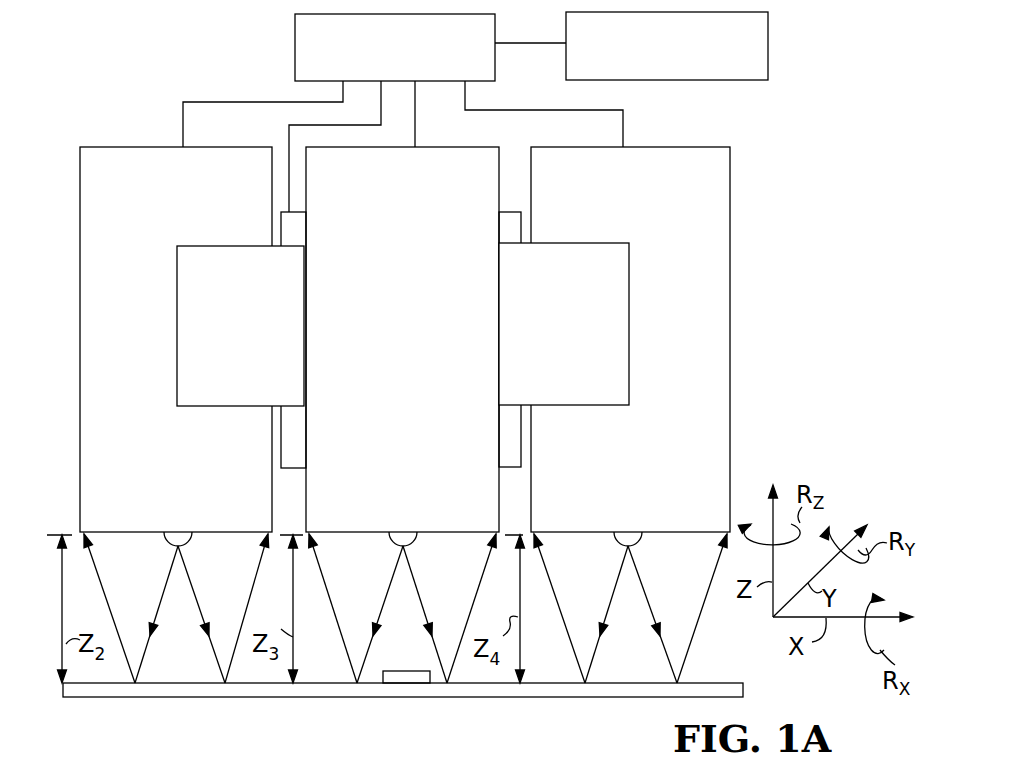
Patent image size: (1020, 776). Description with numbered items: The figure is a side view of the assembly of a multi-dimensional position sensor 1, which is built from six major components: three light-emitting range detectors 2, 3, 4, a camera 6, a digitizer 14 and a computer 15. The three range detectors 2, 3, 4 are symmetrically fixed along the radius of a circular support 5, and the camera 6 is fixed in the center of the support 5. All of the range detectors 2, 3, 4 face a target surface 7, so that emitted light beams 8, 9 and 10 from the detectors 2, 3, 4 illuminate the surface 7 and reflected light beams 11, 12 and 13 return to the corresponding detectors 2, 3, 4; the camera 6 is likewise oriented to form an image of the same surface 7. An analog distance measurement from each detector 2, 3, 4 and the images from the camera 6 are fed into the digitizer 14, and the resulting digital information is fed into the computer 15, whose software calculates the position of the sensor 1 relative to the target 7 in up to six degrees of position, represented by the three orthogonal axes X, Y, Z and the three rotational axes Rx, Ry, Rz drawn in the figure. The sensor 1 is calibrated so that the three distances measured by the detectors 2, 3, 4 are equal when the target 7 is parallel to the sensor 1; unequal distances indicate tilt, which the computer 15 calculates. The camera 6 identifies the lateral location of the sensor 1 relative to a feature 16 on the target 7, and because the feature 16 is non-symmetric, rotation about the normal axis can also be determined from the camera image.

The multi-dimensional position sensor 1 is at (130, 85).
The light-emitting range detector 2 is at (190, 208).
The light-emitting range detector 3 is at (415, 214).
The light-emitting range detector 4 is at (642, 214).
The circular support 5 is at (261, 335).
The camera 6 is at (290, 440).
The target 7 is at (718, 681).
The emitted light beam 8 is at (200, 617).
The emitted light beam 9 is at (423, 617).
The emitted light beam 10 is at (651, 620).
The reflected light beam 11 is at (103, 589).
The reflected light beam 12 is at (328, 593).
The reflected light beam 13 is at (554, 592).
The digitizer 14 is at (295, 53).
The computer 15 is at (668, 80).
The feature 16 is at (409, 684).